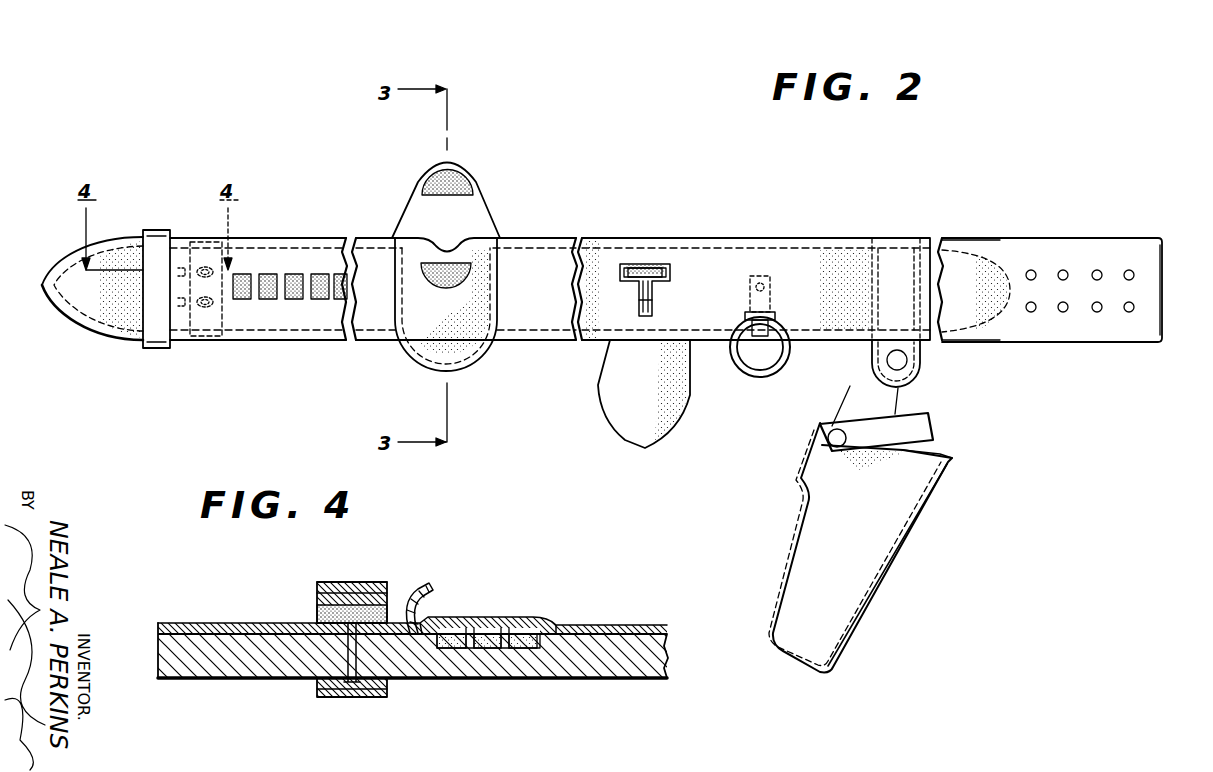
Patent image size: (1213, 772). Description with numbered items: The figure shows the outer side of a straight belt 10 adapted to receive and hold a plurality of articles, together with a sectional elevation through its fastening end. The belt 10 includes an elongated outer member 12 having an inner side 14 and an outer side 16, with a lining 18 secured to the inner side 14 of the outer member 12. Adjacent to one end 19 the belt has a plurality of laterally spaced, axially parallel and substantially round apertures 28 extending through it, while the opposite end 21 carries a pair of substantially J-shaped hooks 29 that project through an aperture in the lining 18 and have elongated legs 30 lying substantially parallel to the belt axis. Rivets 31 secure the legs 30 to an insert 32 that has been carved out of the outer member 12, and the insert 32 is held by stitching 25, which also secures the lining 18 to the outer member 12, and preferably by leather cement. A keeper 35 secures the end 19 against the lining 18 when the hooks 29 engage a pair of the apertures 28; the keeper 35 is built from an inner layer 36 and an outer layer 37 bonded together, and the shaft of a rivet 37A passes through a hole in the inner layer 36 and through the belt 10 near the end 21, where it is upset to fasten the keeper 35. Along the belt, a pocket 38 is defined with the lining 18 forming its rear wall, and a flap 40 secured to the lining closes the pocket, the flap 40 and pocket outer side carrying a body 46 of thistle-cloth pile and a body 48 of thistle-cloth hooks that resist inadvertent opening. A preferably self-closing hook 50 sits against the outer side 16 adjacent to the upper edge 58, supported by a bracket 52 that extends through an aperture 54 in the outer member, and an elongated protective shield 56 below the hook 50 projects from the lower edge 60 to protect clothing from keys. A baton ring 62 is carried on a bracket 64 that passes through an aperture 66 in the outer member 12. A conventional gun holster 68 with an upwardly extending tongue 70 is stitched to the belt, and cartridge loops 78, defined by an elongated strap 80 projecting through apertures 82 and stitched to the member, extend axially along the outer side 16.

In FIG. 2, the belt 10 is at (636, 178).
In FIG. 2, the outer member 12 is at (1052, 336).
In FIG. 4, the outer member 12 is at (650, 668).
In FIG. 4, the inner side 14 is at (568, 620).
In FIG. 2, the outer side 16 is at (980, 310).
In FIG. 4, the outer side 16 is at (582, 680).
In FIG. 4, the lining 18 is at (620, 622).
In FIG. 2, the end 19 is at (1164, 322).
In FIG. 2, the end 21 is at (78, 326).
In FIG. 2, the stitching 25 is at (212, 332).
In FIG. 2, the apertures 28 is at (1066, 272).
In FIG. 2, the J-shaped hooks 29 is at (186, 332).
In FIG. 4, the J-shaped hooks 29 is at (412, 596).
In FIG. 4, the legs 30 is at (454, 636).
In FIG. 4, the rivets 31 is at (506, 634).
In FIG. 4, the insert 32 is at (456, 650).
In FIG. 2, the keeper 35 is at (128, 264).
In FIG. 4, the keeper 35 is at (312, 596).
In FIG. 4, the inner layer 36 is at (316, 614).
In FIG. 4, the outer layer 37 is at (344, 582).
In FIG. 4, the rivet 37A is at (348, 660).
In FIG. 2, the pocket 38 is at (492, 270).
In FIG. 2, the flap 40 is at (410, 196).
In FIG. 2, the body of thistle-cloth pile 46 is at (472, 182).
In FIG. 2, the body of thistle-cloth hooks 48 is at (424, 262).
In FIG. 2, the hook 50 is at (642, 312).
In FIG. 2, the bracket 52 is at (630, 264).
In FIG. 2, the aperture 54 is at (652, 264).
In FIG. 2, the protective shield 56 is at (620, 412).
In FIG. 2, the upper edge 58 is at (832, 240).
In FIG. 2, the lower edge 60 is at (852, 340).
In FIG. 2, the baton ring 62 is at (760, 378).
In FIG. 2, the bracket 64 is at (762, 316).
In FIG. 2, the aperture 66 is at (762, 326).
In FIG. 2, the gun holster 68 is at (870, 554).
In FIG. 2, the tongue 70 is at (890, 400).
In FIG. 2, the cartridge loops 78 is at (320, 300).
In FIG. 2, the strap 80 is at (316, 272).
In FIG. 2, the apertures 82 is at (268, 300).